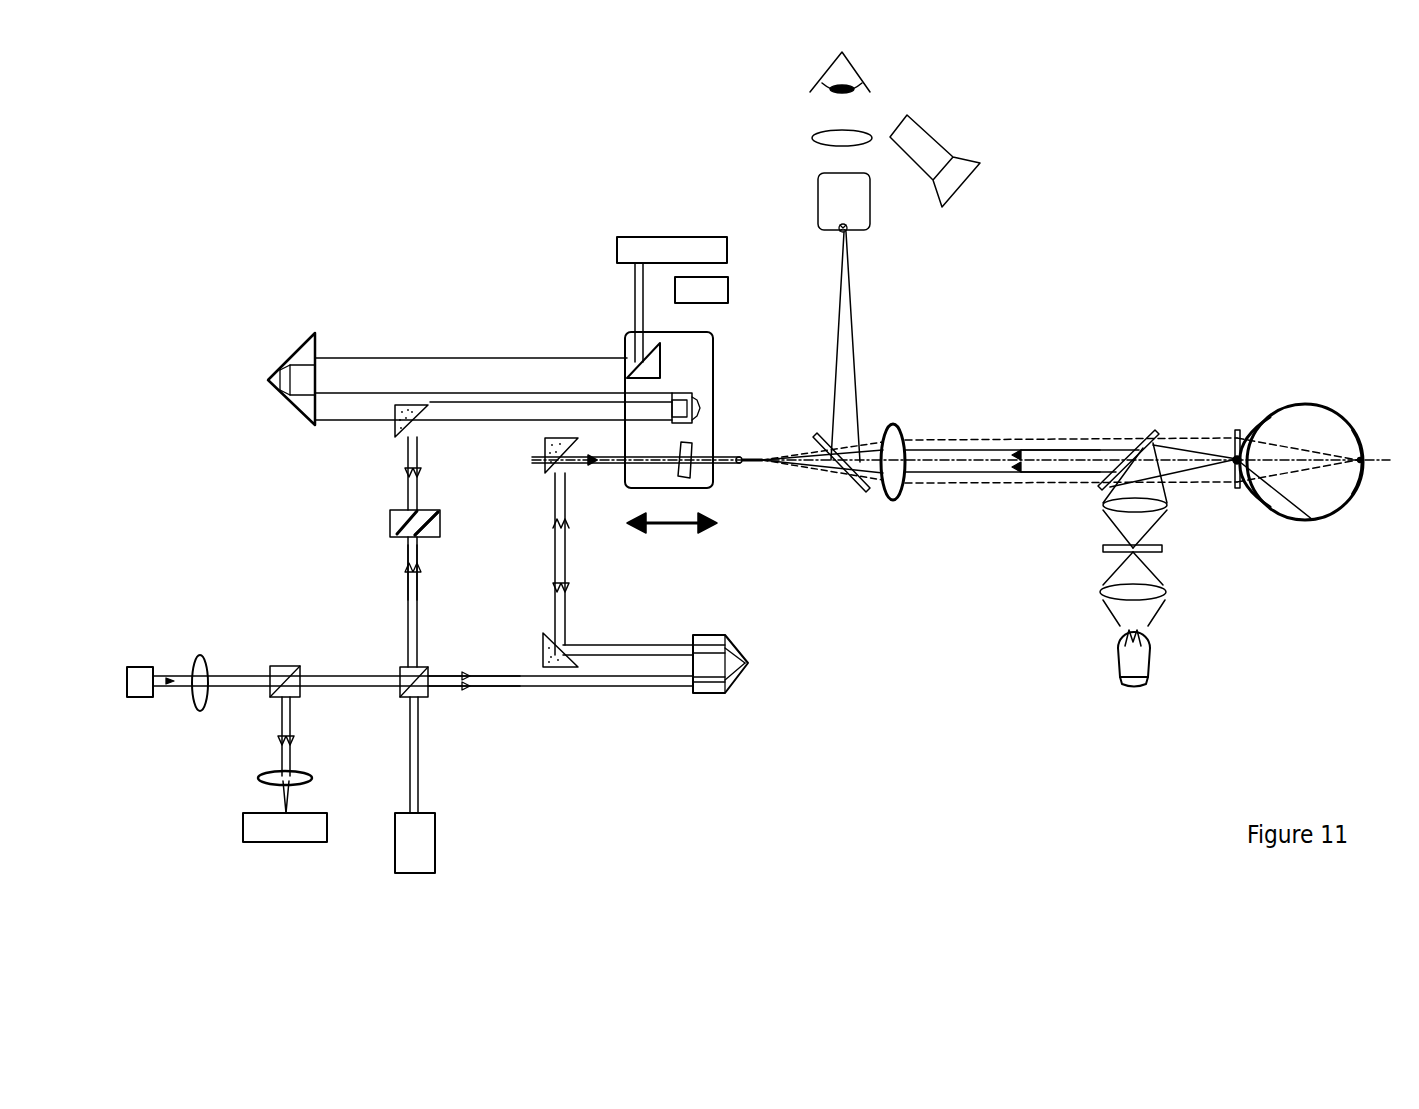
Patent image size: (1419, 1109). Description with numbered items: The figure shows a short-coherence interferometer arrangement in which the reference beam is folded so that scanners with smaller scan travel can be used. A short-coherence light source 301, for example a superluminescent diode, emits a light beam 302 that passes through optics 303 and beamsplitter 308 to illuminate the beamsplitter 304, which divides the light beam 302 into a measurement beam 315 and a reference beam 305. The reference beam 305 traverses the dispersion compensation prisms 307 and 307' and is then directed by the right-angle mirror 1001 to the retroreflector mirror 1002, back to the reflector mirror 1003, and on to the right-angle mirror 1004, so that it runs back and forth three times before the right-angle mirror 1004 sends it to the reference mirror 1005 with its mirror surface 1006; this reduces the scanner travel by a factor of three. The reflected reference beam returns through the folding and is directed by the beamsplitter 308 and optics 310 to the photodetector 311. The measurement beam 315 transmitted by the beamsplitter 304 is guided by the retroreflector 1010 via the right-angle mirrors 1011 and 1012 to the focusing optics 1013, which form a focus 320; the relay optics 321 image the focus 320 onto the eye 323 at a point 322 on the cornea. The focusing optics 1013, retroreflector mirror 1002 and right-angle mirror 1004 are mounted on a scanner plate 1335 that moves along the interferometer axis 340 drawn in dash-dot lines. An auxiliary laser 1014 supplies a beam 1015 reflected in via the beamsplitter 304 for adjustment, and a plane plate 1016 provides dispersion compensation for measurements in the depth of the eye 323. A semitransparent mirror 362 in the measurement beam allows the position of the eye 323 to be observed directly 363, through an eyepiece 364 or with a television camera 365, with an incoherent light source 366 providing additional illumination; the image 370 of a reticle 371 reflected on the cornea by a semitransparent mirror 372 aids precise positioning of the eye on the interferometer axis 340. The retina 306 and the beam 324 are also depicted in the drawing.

The short-coherence light source 301 is at (132, 665).
The light beam 302 is at (172, 677).
The optics 303 is at (202, 655).
The beamsplitter 304 is at (402, 665).
The reference beam 305 is at (407, 572).
The retina 306 is at (1355, 438).
The dispersion compensation prism 307 is at (392, 522).
The dispersion compensation prism 307' is at (457, 529).
The beamsplitter 308 is at (285, 665).
The optics 310 is at (258, 780).
The photodetector 311 is at (255, 823).
The measurement beam 315 is at (467, 670).
The focus 320 is at (742, 457).
The relay optics 321 is at (902, 435).
The point 322 is at (1313, 520).
The eye 323 is at (1290, 402).
The sample beam 324 is at (1018, 455).
The interferometer axis 340 is at (1380, 450).
The semitransparent mirror 362 is at (867, 490).
The direct observation 363 is at (820, 83).
The eyepiece 364 is at (812, 138).
The television camera 365 is at (817, 197).
The incoherent light source 366 is at (922, 145).
The image 370 is at (1237, 438).
The reticle 371 is at (1163, 550).
The semitransparent mirror 372 is at (1147, 432).
The right-angle mirror 1001 is at (395, 437).
The retroreflector mirror 1002 is at (697, 398).
The reflector mirror 1003 is at (295, 413).
The right-angle mirror 1004 is at (662, 367).
The reference mirror 1005 is at (617, 247).
The mirror surface 1006 is at (617, 268).
The retroreflector 1010 is at (748, 663).
The right-angle mirror 1011 is at (543, 633).
The right-angle mirror 1012 is at (545, 473).
The focusing optics 1013 is at (690, 472).
The auxiliary laser 1014 is at (427, 828).
The beam 1015 is at (418, 757).
The plane plate 1016 is at (730, 295).
The scanner plate 1335 is at (625, 332).